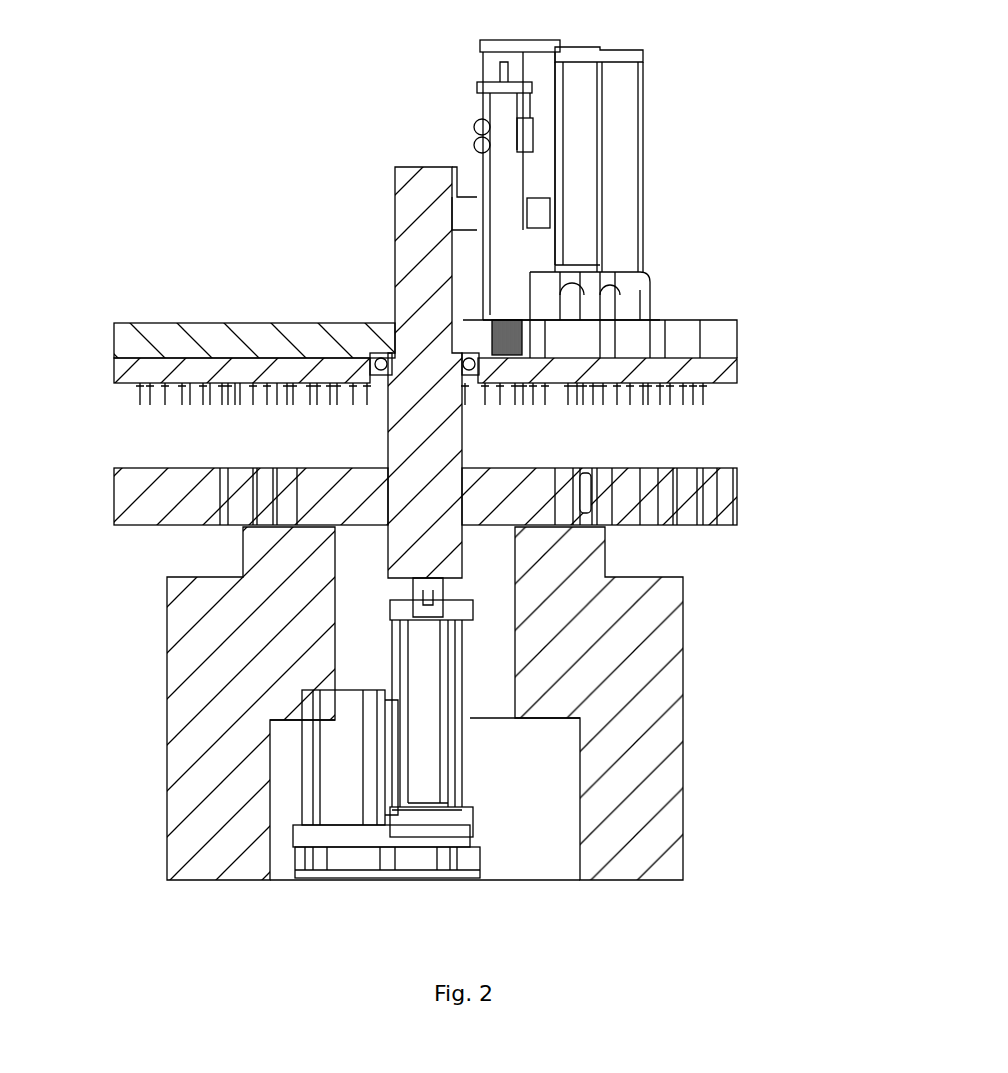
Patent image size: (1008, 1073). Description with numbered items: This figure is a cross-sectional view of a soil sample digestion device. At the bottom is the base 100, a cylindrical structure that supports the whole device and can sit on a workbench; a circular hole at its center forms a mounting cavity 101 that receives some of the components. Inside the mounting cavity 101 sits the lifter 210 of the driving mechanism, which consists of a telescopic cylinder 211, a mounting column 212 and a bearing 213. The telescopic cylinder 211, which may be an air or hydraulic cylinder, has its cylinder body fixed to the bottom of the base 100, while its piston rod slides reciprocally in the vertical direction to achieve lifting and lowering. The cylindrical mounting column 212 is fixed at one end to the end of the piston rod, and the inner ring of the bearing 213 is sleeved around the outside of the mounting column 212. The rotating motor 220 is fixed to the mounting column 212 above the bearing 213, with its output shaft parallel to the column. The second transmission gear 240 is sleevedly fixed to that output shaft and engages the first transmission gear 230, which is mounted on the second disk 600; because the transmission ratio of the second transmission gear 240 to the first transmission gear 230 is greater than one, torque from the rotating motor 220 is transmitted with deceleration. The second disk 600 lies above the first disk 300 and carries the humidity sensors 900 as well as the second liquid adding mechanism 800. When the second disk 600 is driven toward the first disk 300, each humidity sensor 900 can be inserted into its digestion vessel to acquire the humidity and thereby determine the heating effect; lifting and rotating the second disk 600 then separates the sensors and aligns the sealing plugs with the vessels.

The base 100 is at (662, 722).
The mounting cavity 101 is at (535, 832).
The lifter 210 is at (470, 670).
The telescopic cylinder 211 is at (395, 722).
The mounting column 212 is at (428, 292).
The bearing 213 is at (383, 353).
The rotating motor 220 is at (512, 250).
The first transmission gear 230 is at (473, 307).
The second transmission gear 240 is at (527, 320).
The first disk 300 is at (723, 510).
The second disk 600 is at (710, 370).
The second liquid adding mechanism 800 is at (633, 165).
The humidity sensor 900 is at (710, 405).